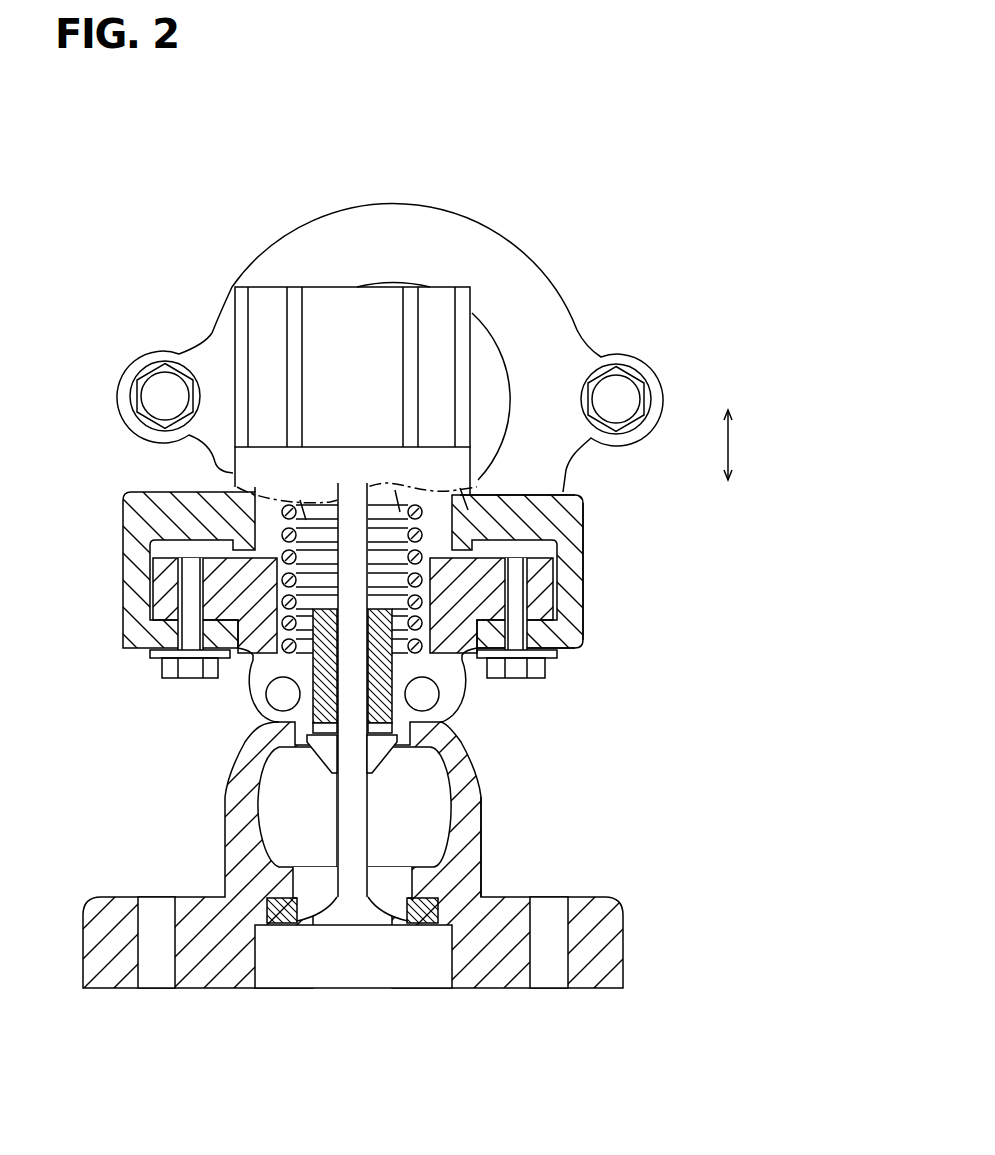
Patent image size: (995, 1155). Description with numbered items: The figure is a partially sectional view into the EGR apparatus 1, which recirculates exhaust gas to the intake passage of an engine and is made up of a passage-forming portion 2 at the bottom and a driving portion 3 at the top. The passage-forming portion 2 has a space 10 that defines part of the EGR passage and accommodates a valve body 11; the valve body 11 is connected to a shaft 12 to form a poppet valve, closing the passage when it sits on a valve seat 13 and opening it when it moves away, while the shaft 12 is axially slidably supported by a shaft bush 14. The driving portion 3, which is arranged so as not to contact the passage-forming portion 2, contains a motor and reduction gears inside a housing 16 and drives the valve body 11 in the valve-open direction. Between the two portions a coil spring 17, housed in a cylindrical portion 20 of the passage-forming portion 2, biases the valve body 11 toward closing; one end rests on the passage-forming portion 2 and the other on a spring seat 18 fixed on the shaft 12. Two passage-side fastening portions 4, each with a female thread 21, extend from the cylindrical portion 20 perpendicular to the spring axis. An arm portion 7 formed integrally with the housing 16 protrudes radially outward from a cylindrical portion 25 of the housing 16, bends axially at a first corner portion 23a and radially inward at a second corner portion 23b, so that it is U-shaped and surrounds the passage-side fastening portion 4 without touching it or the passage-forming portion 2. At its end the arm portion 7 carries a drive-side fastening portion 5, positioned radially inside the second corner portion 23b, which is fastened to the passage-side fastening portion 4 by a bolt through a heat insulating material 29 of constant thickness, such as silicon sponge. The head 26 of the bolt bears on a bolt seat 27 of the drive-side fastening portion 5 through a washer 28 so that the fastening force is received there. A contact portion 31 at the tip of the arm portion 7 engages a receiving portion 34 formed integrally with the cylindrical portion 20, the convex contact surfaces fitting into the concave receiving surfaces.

The EGR apparatus 1 is at (150, 210).
The passage-forming portion 2 is at (361, 790).
The driving portion 3 is at (568, 252).
The passage-side fastening portion 4 is at (540, 573).
The drive-side fastening portion 5 is at (542, 657).
The arm portion 7 is at (588, 637).
The space 10 is at (323, 900).
The valve body 11 is at (357, 905).
The shaft 12 is at (348, 820).
The valve seat 13 is at (428, 913).
The shaft bush 14 is at (308, 731).
The housing 16 is at (230, 332).
The coil spring 17 is at (277, 578).
The spring seat 18 is at (286, 513).
The cylindrical portion 20 is at (433, 603).
The female thread 21 is at (525, 548).
The first corner portion 23a is at (572, 518).
The second corner portion 23b is at (567, 648).
The cylindrical portion 25 is at (247, 472).
The head 26 is at (515, 660).
The bolt seat 27 is at (533, 635).
The washer 28 is at (500, 660).
The heat insulating material 29 is at (540, 612).
The contact portion 31 is at (492, 645).
The receiving portion 34 is at (468, 640).